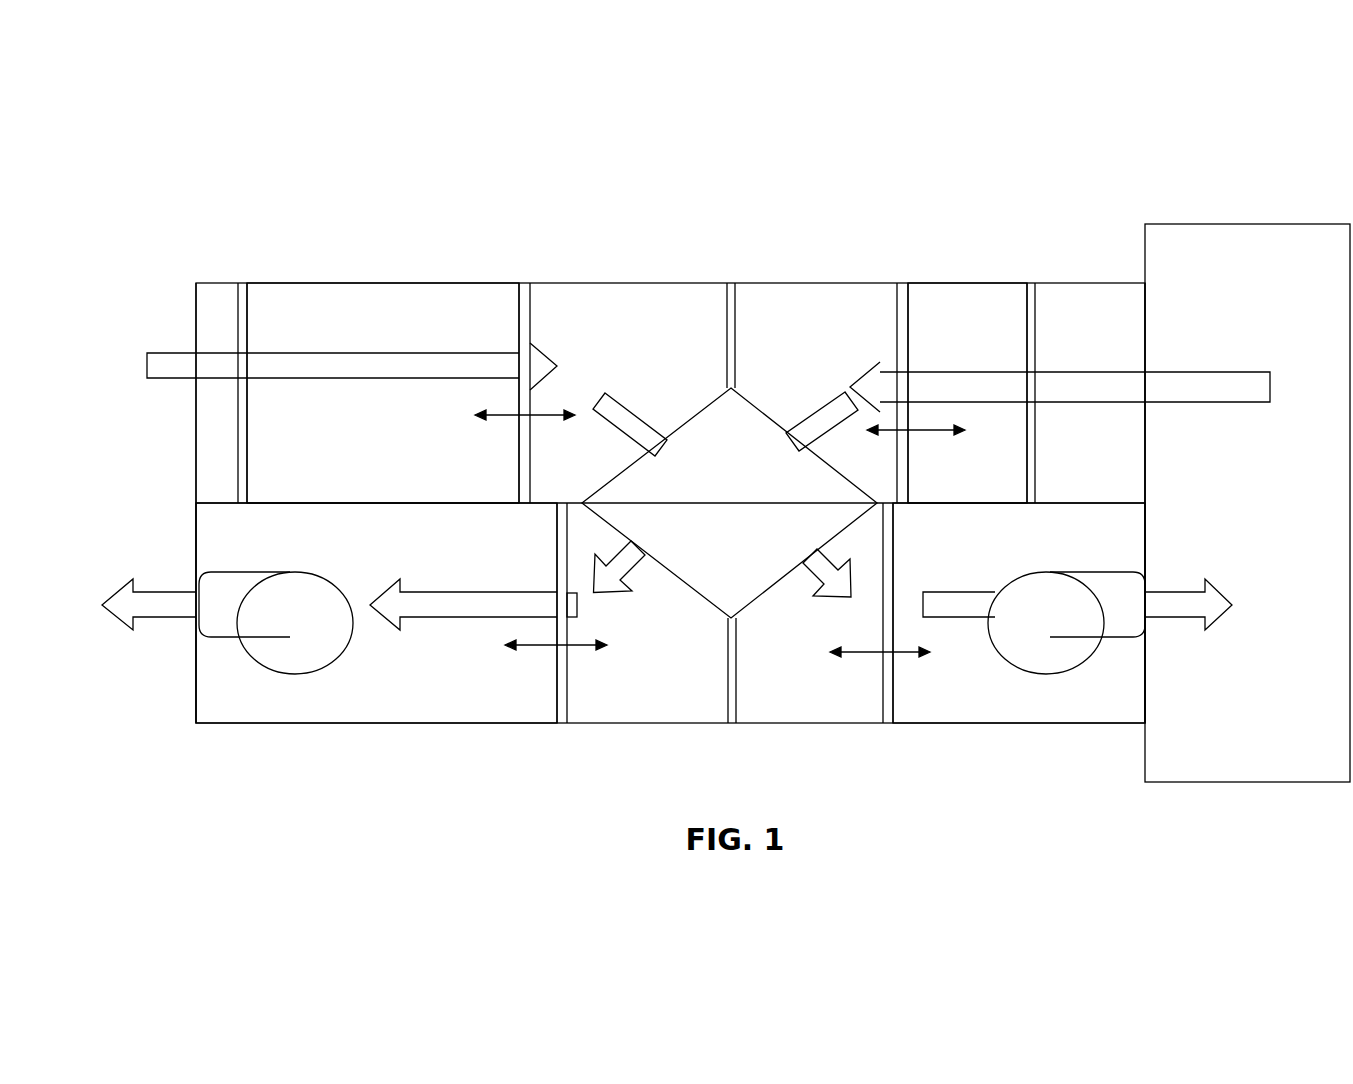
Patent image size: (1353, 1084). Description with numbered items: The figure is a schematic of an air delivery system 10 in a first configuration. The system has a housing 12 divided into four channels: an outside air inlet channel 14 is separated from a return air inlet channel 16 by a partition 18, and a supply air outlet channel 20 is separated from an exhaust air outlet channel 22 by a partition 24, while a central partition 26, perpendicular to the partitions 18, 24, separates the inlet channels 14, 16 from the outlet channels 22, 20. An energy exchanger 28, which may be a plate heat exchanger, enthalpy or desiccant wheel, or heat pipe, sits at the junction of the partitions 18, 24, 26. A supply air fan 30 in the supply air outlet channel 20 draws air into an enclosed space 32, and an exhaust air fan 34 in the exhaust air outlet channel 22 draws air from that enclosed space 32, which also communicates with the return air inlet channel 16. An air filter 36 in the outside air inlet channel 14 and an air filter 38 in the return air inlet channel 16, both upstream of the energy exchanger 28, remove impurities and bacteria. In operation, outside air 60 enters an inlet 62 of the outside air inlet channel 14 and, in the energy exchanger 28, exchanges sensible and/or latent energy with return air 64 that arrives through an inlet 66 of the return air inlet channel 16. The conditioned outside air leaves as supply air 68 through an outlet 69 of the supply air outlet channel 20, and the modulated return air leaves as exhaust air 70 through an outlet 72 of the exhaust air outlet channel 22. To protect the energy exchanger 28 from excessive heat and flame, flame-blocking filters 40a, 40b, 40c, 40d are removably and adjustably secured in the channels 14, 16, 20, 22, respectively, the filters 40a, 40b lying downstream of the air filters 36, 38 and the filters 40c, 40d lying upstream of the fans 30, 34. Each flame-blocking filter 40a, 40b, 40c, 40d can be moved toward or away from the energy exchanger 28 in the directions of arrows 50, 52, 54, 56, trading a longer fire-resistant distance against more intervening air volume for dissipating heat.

The air delivery system 10 is at (124, 187).
The housing 12 is at (397, 283).
The outside air inlet channel 14 is at (320, 300).
The return air inlet channel 16 is at (965, 315).
The partition 18 is at (738, 308).
The supply air outlet channel 20 is at (968, 705).
The exhaust air outlet channel 22 is at (357, 690).
The partition 24 is at (738, 690).
The central partition 26 is at (349, 502).
The energy exchanger 28 is at (729, 503).
The supply air fan 30 is at (1057, 672).
The enclosed space 32 is at (1247, 503).
The exhaust air fan 34 is at (275, 670).
The air filter 36 is at (238, 316).
The air filter 38 is at (1035, 310).
The flame-blocking filter 40a is at (530, 310).
The flame-blocking filter 40b is at (910, 315).
The flame-blocking filter 40c is at (895, 690).
The flame-blocking filter 40d is at (555, 690).
The arrow 50 is at (505, 418).
The arrow 52 is at (925, 433).
The arrow 54 is at (907, 655).
The arrow 56 is at (577, 648).
The outside air 60 is at (166, 353).
The inlet 62 is at (197, 432).
The return air 64 is at (1190, 373).
The inlet 66 is at (1147, 466).
The supply air 68 is at (889, 560).
The outlet 69 is at (1147, 552).
The exhaust air 70 is at (150, 617).
The outlet 72 is at (197, 690).